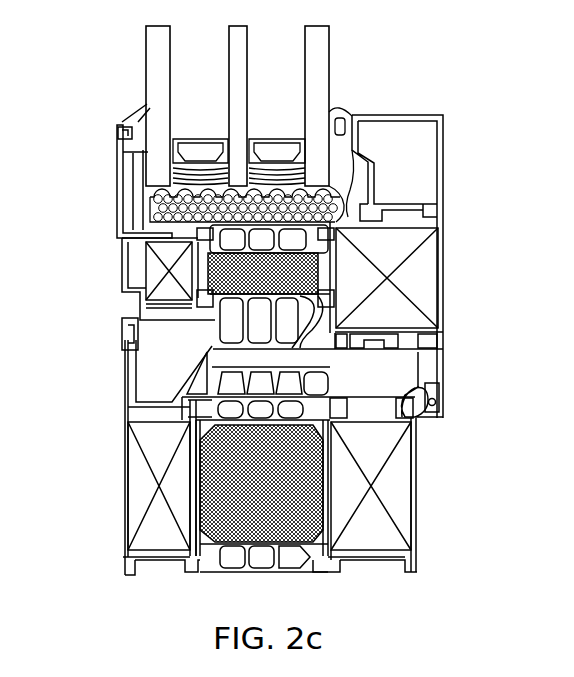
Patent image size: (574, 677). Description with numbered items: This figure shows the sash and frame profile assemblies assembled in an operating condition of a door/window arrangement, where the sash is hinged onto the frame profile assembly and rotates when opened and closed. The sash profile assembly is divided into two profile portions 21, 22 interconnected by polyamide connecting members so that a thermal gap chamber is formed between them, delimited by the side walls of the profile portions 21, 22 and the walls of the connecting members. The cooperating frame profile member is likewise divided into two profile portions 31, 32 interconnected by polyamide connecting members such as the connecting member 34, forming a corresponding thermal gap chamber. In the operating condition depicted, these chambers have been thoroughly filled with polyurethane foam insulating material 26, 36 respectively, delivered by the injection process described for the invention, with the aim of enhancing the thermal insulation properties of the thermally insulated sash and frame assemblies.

The sash profile portion 21 is at (445, 303).
The sash profile portion 22 is at (118, 198).
The polyurethane foam insulating material 26 is at (377, 217).
The frame profile portion 31 is at (415, 458).
The frame profile portion 32 is at (122, 463).
The polyamide connecting member 34 is at (243, 555).
The polyurethane foam insulating material 36 is at (275, 500).